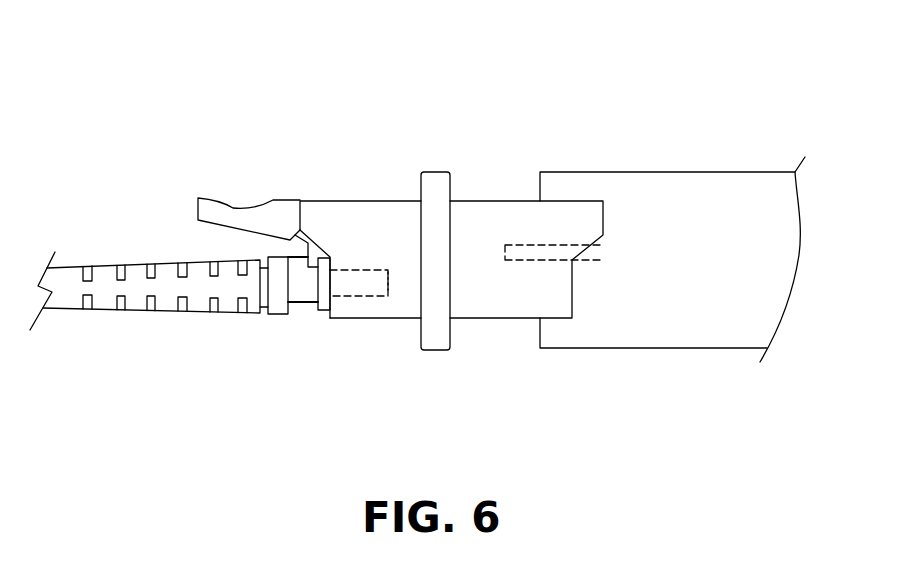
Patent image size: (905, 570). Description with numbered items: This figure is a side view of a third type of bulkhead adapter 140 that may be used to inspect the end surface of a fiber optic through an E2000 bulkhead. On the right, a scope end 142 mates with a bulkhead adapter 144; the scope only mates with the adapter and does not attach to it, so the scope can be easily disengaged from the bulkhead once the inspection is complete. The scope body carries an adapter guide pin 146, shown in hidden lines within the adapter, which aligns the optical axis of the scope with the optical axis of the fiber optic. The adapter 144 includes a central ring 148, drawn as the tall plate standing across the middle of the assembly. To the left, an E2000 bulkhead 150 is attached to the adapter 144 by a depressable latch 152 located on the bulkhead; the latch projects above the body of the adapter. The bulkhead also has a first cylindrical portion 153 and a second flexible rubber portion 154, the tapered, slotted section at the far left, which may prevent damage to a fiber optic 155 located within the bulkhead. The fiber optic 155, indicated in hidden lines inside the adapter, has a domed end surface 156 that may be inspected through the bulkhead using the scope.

The bulkhead adapter 140 is at (507, 121).
The scope end 142 is at (710, 172).
The bulkhead adapter 144 is at (582, 362).
The adapter guide pin 146 is at (530, 243).
The central ring 148 is at (435, 182).
The E2000 bulkhead 150 is at (322, 355).
The depressable latch 152 is at (233, 207).
The first cylindrical portion 153 is at (318, 322).
The second flexible rubber portion 154 is at (170, 306).
The fiber optic 155 is at (362, 270).
The domed end surface 156 is at (392, 288).